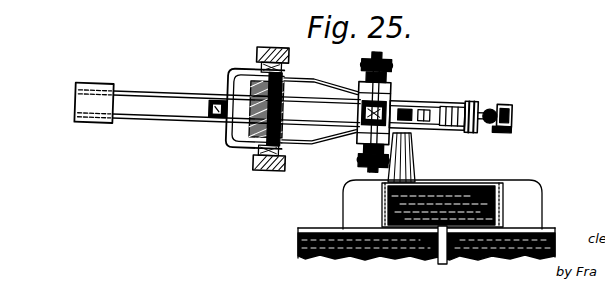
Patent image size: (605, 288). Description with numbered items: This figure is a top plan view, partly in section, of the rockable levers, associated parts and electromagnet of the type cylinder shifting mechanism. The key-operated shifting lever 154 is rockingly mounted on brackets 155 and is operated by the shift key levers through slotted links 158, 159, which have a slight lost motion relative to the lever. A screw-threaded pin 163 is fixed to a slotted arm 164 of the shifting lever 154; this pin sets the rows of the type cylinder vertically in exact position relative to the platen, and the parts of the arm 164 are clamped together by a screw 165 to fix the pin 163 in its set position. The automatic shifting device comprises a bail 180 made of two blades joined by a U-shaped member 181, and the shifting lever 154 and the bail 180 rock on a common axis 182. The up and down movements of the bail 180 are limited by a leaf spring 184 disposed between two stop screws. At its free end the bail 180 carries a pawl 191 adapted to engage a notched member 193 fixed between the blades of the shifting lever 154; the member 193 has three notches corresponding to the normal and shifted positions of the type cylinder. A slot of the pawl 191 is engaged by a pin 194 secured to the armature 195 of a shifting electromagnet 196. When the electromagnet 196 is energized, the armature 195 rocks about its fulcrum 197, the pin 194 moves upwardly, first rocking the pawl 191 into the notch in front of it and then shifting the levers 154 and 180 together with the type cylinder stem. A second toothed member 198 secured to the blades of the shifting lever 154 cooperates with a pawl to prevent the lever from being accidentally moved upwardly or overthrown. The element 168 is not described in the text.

The shifting lever 154 is at (145, 93).
The brackets 155 is at (288, 53).
The slotted link 158 is at (393, 65).
The slotted link 159 is at (360, 163).
The screw-threaded pin 163 is at (491, 108).
The arm 164 is at (512, 112).
The screw 165 is at (511, 133).
The sleeve 168 is at (76, 106).
The bail 180 is at (315, 80).
The U-shaped member 181 is at (228, 78).
The common axis 182 is at (272, 47).
The leaf spring 184 is at (225, 122).
The pawl 191 is at (428, 132).
The notched member 193 is at (470, 102).
The pin 194 is at (400, 107).
The armature 195 is at (450, 185).
The shifting electromagnet 196 is at (347, 212).
The fulcrum 197 is at (450, 262).
The toothed member 198 is at (350, 108).